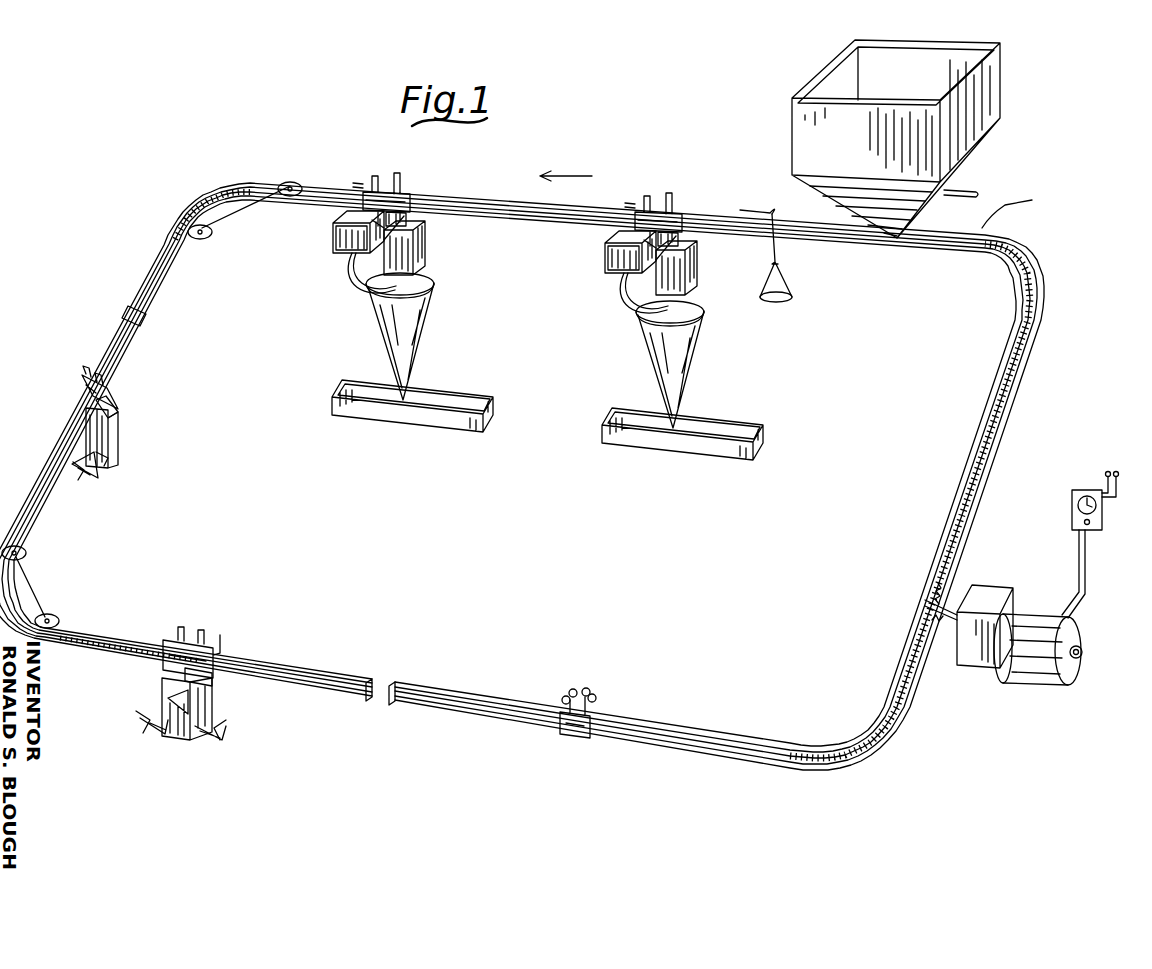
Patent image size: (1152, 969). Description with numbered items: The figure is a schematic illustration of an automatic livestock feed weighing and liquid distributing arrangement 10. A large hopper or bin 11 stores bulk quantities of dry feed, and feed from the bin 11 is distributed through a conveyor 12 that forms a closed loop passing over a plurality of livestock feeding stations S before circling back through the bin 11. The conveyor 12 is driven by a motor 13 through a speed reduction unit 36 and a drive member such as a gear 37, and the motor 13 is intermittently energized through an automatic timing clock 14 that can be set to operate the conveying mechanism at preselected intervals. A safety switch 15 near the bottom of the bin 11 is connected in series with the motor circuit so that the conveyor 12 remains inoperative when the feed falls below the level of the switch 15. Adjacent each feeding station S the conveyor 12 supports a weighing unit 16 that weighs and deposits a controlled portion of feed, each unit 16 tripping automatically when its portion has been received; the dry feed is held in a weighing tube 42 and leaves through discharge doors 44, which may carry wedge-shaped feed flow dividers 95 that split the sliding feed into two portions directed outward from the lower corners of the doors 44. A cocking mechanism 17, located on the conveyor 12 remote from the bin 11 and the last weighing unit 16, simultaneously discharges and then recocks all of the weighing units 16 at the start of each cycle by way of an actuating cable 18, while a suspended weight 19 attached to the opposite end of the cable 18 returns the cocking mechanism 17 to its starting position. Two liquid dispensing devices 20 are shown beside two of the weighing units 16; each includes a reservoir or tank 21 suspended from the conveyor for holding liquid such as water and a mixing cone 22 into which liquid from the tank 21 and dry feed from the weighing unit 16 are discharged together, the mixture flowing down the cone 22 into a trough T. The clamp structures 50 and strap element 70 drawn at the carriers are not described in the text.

The automatic livestock feed weighing and liquid distributing arrangement 10 is at (982, 228).
The hopper or bin 11 is at (990, 100).
The conveyor 12 is at (1000, 422).
The motor 13 is at (1030, 682).
The automatic timing clock 14 is at (1072, 512).
The safety switch 15 is at (962, 192).
The weighing unit 16 is at (436, 251).
The cocking mechanism 17 is at (570, 738).
The actuating cable 18 is at (735, 211).
The suspended weight 19 is at (795, 290).
The liquid dispensing device 20 is at (322, 235).
The reservoir or tank 21 is at (336, 242).
The mixing cone 22 is at (418, 326).
The speed reduction unit 36 is at (968, 660).
The gear 37 is at (955, 590).
The weighing tube 42 is at (420, 221).
The discharge door 44 is at (416, 289).
The clamp 50 is at (390, 180).
The strap 70 is at (360, 258).
The feed flow divider 95 is at (128, 428).
The livestock feeding station S is at (352, 364).
The trough T is at (470, 401).